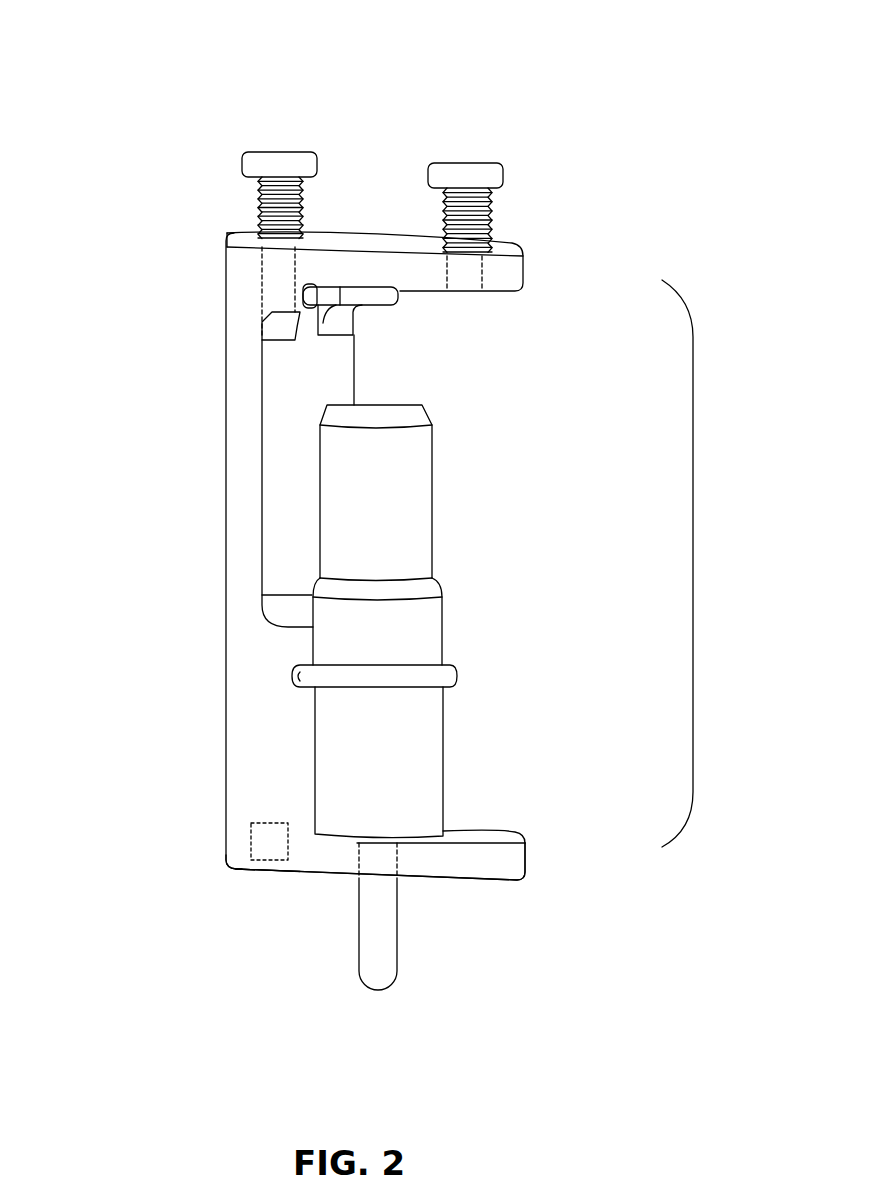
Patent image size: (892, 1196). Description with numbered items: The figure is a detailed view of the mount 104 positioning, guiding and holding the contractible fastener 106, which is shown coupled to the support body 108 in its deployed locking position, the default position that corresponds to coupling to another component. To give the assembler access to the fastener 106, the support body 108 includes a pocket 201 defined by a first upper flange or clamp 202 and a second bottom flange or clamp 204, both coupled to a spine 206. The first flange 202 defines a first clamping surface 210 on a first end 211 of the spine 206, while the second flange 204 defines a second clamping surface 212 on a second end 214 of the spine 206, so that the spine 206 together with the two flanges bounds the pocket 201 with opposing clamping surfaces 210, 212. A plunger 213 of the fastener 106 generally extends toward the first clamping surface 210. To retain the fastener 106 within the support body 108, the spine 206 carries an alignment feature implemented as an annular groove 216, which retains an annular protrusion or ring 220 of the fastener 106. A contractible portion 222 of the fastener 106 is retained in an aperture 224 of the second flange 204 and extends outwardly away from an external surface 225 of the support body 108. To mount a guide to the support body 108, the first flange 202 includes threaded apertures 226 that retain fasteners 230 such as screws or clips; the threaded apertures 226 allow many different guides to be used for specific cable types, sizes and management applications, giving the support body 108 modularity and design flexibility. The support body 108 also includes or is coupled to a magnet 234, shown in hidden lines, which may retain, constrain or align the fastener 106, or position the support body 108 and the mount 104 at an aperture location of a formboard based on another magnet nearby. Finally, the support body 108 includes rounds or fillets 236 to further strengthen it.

The mount 104 is at (612, 36).
The contractible fastener 106 is at (430, 740).
The support body 108 is at (225, 315).
The pocket 201 is at (693, 564).
The first upper flange 202 is at (492, 273).
The second bottom flange 204 is at (473, 867).
The spine 206 is at (225, 460).
The first clamping surface 210 is at (430, 293).
The first end 211 is at (227, 243).
The second clamping surface 212 is at (445, 843).
The plunger 213 is at (418, 545).
The second end 214 is at (230, 865).
The annular groove 216 is at (292, 667).
The annular protrusion 220 is at (315, 692).
The contractible portion 222 is at (398, 962).
The aperture 224 is at (357, 860).
The external surface 225 is at (285, 868).
The threaded apertures 226 is at (262, 282).
The fasteners 230 is at (290, 152).
The magnet 234 is at (251, 838).
The rounds or fillets 236 is at (275, 335).